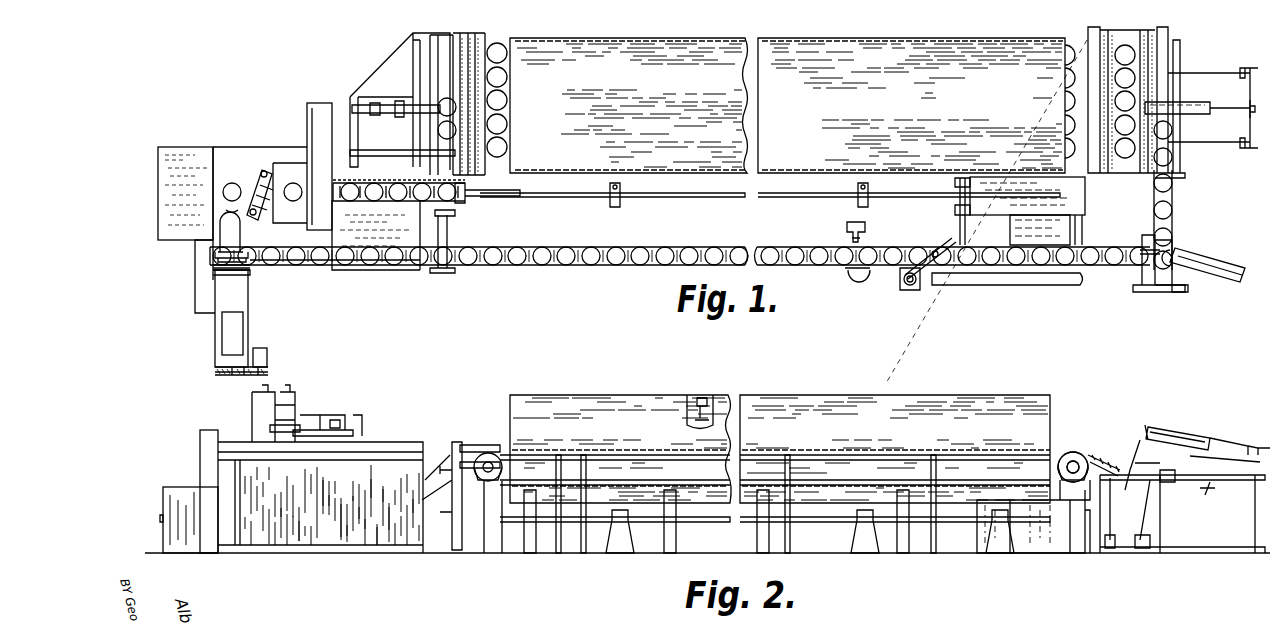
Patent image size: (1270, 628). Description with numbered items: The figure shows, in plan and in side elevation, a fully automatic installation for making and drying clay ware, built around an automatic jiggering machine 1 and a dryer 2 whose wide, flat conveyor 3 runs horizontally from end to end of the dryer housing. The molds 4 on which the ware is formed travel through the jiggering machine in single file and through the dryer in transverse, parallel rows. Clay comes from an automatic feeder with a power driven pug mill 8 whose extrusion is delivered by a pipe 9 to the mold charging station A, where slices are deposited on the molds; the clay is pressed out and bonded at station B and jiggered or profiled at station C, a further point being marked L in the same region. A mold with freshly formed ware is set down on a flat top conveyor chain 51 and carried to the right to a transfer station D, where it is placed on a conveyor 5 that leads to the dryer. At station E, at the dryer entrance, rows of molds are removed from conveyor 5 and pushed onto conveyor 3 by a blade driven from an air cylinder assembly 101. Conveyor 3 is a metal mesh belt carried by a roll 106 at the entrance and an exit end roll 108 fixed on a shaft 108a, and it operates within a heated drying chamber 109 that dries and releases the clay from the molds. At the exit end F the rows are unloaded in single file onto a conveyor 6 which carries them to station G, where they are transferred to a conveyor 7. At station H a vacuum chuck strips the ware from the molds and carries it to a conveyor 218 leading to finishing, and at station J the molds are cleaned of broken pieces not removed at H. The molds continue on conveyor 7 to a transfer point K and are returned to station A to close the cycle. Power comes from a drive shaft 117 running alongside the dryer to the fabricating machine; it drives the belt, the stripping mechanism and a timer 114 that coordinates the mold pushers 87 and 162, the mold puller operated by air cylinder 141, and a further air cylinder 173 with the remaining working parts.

In FIG. 1, the automatic jiggering machine 1 is at (220, 137).
In FIG. 2, the automatic jiggering machine 1 is at (383, 535).
In FIG. 1, the dryer 2 is at (688, 40).
In FIG. 2, the dryer 2 is at (828, 393).
In FIG. 1, the dryer conveyor 3 is at (472, 50).
In FIG. 2, the dryer conveyor 3 is at (502, 452).
In FIG. 1, the molds 4 is at (516, 262).
In FIG. 1, the conveyor 5 is at (450, 152).
In FIG. 2, the conveyor 5 is at (450, 440).
In FIG. 1, the conveyor 6 is at (1170, 42).
In FIG. 2, the conveyor 6 is at (1175, 462).
In FIG. 1, the conveyor 7 is at (1128, 258).
In FIG. 1, the pug mill 8 is at (248, 330).
In FIG. 1, the pipe 9 is at (226, 226).
In FIG. 1, the flat top conveyor chain 51 is at (365, 190).
In FIG. 1, the mold pusher 87 is at (449, 232).
In FIG. 1, the air cylinder assembly 101 is at (390, 100).
In FIG. 2, the roll 106 is at (482, 450).
In FIG. 2, the exit end roll 108 is at (1075, 452).
In FIG. 2, the shaft 108a is at (712, 408).
In FIG. 2, the drying chamber 109 is at (697, 398).
In FIG. 1, the timer 114 is at (1085, 200).
In FIG. 1, the drive shaft 117 is at (722, 195).
In FIG. 2, the drive shaft 117 is at (585, 523).
In FIG. 1, the air cylinder 141 is at (1180, 98).
In FIG. 1, the mold pusher 162 is at (1200, 253).
In FIG. 1, the air cylinder 173 is at (1210, 282).
In FIG. 1, the conveyor 218 is at (1057, 286).
In FIG. 1, the mold charging station A is at (212, 236).
In FIG. 1, the pressing station B is at (250, 170).
In FIG. 1, the jiggering station C is at (293, 178).
In FIG. 2, the jiggering station C is at (307, 412).
In FIG. 1, the transfer station D is at (468, 204).
In FIG. 1, the dryer entrance station E is at (490, 176).
In FIG. 1, the dryer exit end F is at (1085, 40).
In FIG. 1, the transfer station G is at (1172, 243).
In FIG. 1, the stripping station H is at (925, 222).
In FIG. 1, the cleaning station J is at (843, 234).
In FIG. 1, the transfer point K is at (213, 272).
In FIG. 1, the station L is at (230, 189).